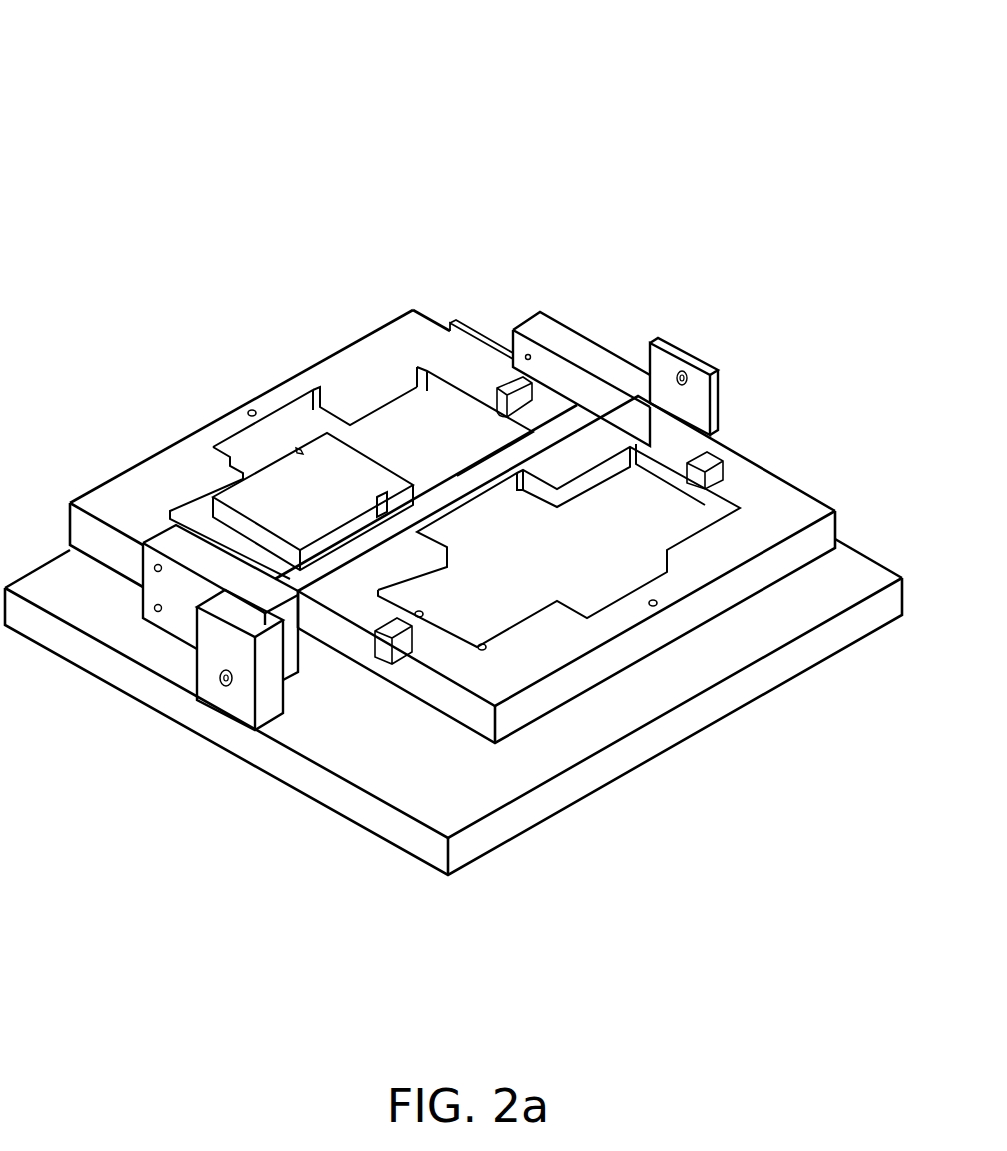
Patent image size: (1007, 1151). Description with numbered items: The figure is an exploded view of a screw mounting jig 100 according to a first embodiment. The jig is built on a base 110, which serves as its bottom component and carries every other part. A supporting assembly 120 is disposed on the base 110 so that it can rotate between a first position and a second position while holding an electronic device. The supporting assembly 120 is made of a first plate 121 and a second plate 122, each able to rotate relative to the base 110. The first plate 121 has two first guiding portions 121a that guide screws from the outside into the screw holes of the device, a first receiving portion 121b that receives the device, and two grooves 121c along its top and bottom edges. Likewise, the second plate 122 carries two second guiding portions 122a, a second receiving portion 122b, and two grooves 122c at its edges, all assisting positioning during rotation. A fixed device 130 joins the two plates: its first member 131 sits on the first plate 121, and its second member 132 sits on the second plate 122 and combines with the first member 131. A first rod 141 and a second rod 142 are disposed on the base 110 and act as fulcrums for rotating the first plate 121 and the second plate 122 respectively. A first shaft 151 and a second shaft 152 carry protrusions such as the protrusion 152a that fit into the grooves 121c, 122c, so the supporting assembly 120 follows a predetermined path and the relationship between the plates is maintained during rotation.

The screw mounting jig 100 is at (52, 31).
The base 110 is at (862, 578).
The supporting assembly 120 is at (590, 168).
The first plate 121 is at (353, 384).
The first guiding portions 121a is at (297, 448).
The first receiving portion 121b is at (390, 423).
The grooves 121c is at (510, 353).
The second plate 122 is at (566, 516).
The second guiding portions 122a is at (486, 648).
The second receiving portion 122b is at (570, 592).
The grooves 122c is at (710, 455).
The fixed device 130 is at (77, 280).
The first member 131 is at (250, 412).
The second member 132 is at (651, 602).
The first rod 141 is at (228, 690).
The second rod 142 is at (686, 370).
The first shaft 151 is at (173, 617).
The second shaft 152 is at (566, 324).
The protrusion 152a is at (528, 353).